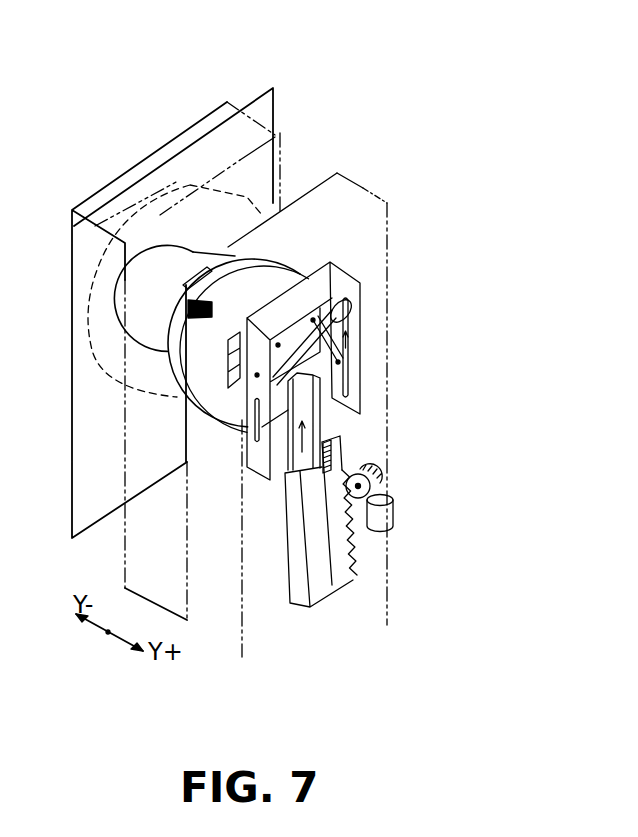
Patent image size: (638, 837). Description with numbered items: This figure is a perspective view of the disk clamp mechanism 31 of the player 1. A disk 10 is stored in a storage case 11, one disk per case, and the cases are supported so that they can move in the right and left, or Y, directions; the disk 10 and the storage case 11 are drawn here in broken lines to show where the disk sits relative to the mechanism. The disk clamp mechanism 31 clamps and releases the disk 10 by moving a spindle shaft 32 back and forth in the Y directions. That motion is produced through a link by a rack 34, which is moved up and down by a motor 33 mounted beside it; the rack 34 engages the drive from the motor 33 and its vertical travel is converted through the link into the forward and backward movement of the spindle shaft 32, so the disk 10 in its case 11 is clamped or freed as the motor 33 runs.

The player 1 is at (376, 200).
The disk 10 is at (191, 183).
The storage case 11 is at (253, 97).
The disk clamp mechanism 31 is at (393, 348).
The spindle shaft 32 is at (270, 217).
The motor 33 is at (393, 507).
The rack 34 is at (343, 467).